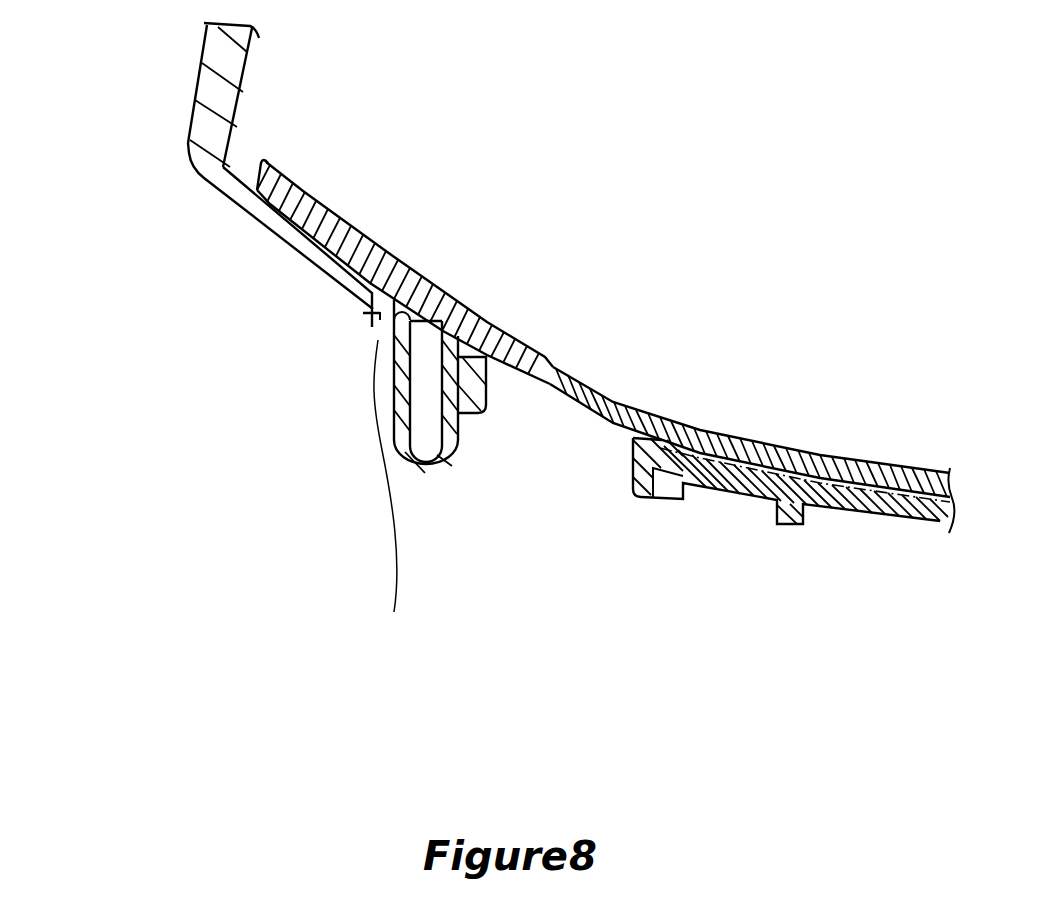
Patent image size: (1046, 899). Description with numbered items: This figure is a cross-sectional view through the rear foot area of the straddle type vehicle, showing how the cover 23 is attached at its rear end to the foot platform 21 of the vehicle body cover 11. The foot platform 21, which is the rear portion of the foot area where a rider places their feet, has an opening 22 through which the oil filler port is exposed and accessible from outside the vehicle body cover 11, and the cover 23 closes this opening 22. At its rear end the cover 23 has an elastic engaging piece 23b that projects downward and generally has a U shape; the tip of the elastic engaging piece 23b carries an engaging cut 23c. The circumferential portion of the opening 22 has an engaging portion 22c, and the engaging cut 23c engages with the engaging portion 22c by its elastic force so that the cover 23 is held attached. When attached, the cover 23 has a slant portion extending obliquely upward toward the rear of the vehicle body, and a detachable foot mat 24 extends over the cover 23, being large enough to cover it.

The vehicle body cover 11 is at (200, 68).
The foot platform 21 is at (245, 217).
The opening 22 is at (438, 288).
The engaging portion 22c is at (373, 318).
The cover 23 is at (740, 493).
The elastic engaging piece 23b is at (428, 466).
The engaging cut 23c is at (372, 335).
The detachable foot mat 24 is at (637, 413).